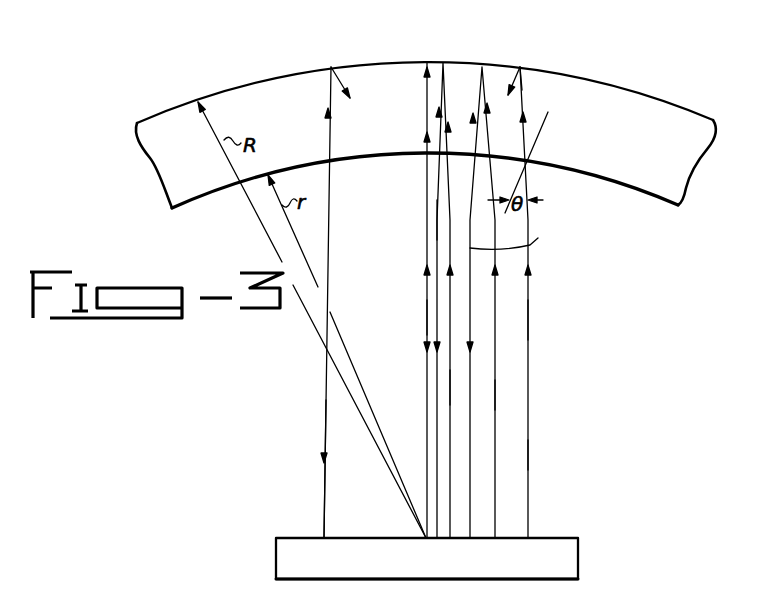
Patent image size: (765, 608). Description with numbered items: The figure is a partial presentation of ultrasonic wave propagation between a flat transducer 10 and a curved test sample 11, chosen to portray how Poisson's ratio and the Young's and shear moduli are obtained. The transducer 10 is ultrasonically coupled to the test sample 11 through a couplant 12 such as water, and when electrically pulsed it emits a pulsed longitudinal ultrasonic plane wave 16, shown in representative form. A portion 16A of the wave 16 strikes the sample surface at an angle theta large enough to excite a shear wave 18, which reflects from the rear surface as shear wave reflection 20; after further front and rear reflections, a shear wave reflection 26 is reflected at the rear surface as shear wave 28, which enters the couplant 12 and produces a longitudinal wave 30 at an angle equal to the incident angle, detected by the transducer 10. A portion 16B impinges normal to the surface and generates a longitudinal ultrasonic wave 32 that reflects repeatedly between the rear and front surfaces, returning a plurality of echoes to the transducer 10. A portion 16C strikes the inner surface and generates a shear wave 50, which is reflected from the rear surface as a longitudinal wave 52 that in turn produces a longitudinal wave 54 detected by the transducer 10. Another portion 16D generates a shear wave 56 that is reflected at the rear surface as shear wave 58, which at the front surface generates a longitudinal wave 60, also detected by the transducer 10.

The transducer 10 is at (453, 567).
The test sample 11 is at (625, 147).
The couplant 12 is at (673, 334).
The longitudinal ultrasonic plane wave 16 is at (537, 463).
The portion of longitudinal wave 16A is at (530, 325).
The portion of longitudinal wave 16B is at (427, 318).
The portion of longitudinal wave 16C is at (450, 387).
The portion of longitudinal wave 16D is at (500, 390).
The shear wave 18 is at (523, 85).
The reflection 20 is at (520, 67).
The reflection 26 is at (342, 75).
The shear wave 28 is at (330, 85).
The longitudinal wave 30 is at (324, 422).
The longitudinal ultrasonic wave 32 is at (427, 112).
The shear wave 50 is at (445, 62).
The longitudinal wave 52 is at (442, 80).
The longitudinal wave 54 is at (436, 223).
The shear wave 56 is at (515, 80).
The shear wave 58 is at (481, 84).
The longitudinal wave 60 is at (518, 241).